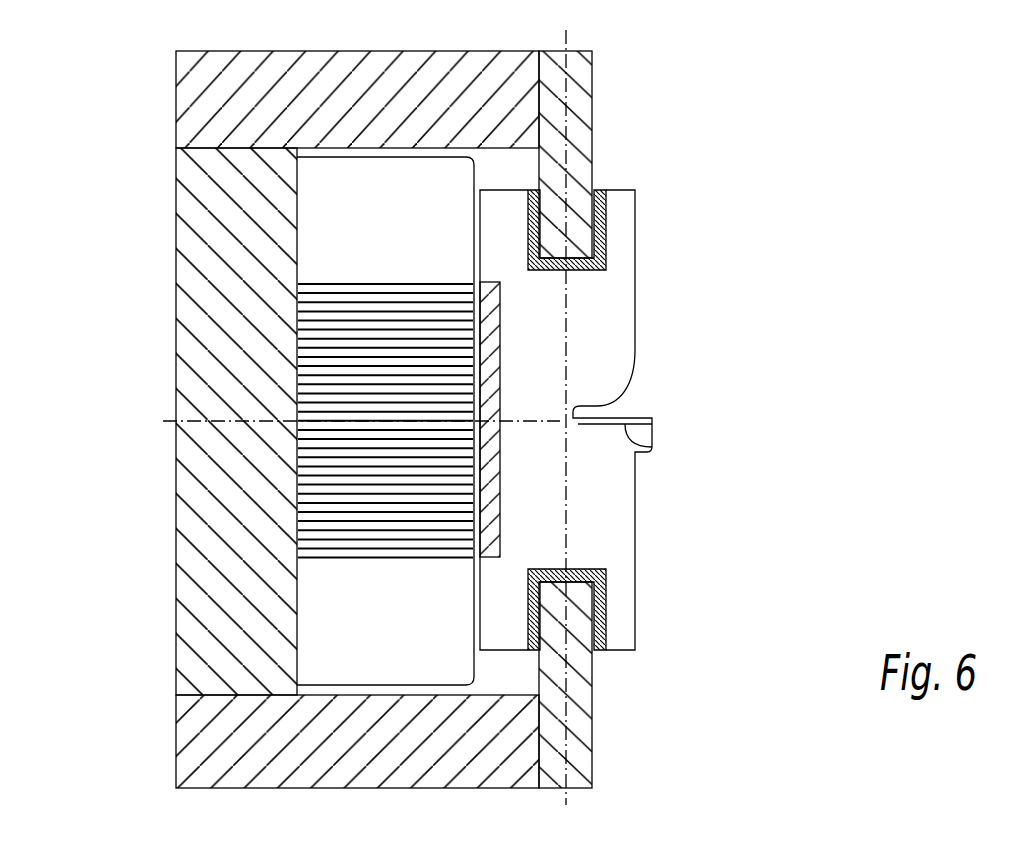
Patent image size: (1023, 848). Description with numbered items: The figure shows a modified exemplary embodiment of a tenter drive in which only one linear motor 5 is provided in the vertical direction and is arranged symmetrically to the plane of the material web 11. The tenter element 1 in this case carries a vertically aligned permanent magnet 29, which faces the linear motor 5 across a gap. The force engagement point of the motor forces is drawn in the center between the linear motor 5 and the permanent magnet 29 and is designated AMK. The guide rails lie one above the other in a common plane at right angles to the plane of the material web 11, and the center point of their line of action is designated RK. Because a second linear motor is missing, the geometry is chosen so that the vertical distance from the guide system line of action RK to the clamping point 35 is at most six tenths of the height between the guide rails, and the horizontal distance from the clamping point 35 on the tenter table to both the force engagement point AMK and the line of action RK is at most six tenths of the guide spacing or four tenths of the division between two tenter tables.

The tenter element 1 is at (617, 325).
The linear motor 5 is at (343, 568).
The material web 11 is at (665, 417).
The permanent magnet 29 is at (490, 360).
The clamping point 35 is at (653, 447).
The line of action of the guide system RK is at (568, 307).
The force engagement point of the motor forces AMK is at (477, 421).